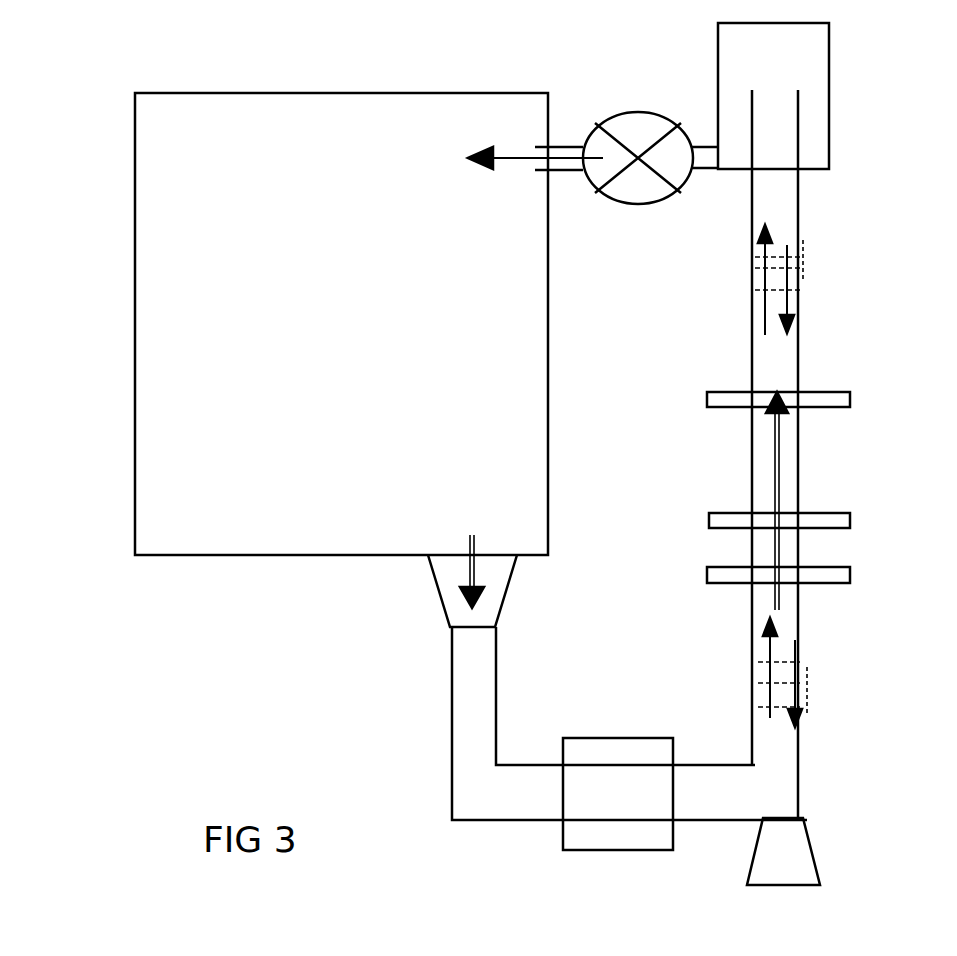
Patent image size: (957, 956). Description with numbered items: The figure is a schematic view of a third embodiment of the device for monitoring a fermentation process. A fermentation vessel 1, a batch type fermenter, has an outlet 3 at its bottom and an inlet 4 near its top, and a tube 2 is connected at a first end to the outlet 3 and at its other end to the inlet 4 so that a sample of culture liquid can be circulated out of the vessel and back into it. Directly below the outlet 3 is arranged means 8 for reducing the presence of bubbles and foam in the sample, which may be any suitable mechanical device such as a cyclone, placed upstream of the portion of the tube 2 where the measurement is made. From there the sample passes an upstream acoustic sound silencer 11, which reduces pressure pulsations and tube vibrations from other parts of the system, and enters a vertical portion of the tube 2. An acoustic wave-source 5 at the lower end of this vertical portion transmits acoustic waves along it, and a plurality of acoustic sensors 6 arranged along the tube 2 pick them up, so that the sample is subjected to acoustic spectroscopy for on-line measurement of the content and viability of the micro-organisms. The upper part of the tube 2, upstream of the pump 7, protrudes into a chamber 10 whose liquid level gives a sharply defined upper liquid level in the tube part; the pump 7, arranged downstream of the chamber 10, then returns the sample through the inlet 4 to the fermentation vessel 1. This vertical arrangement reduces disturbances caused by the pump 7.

The fermentation vessel 1 is at (147, 382).
The tube 2 is at (792, 358).
The outlet 3 is at (502, 553).
The inlet 4 is at (535, 170).
The acoustic wave-source 5 is at (805, 857).
The acoustic sensors 6 is at (852, 402).
The pump 7 is at (643, 113).
The means for reducing the presence of bubbles and foam 8 is at (448, 590).
The chamber 10 is at (817, 98).
The upstream acoustic sound silencer 11 is at (625, 748).